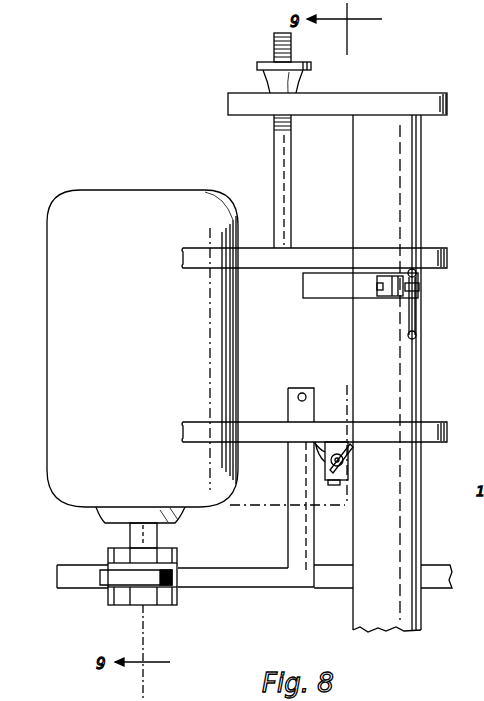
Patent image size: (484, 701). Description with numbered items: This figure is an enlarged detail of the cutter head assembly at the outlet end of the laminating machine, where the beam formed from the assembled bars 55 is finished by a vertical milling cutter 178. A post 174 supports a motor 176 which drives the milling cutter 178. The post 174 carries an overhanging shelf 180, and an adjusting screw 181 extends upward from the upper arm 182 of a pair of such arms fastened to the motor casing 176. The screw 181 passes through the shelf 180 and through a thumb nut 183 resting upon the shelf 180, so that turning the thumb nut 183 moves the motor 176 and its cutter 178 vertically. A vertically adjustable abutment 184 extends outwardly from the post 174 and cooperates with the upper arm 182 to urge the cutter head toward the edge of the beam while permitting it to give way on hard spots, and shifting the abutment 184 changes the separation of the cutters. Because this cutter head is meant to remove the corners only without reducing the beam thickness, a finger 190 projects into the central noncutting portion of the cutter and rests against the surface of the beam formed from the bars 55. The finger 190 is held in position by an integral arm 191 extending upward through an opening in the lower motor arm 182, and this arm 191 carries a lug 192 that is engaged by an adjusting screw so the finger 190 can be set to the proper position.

The bars 55 is at (63, 572).
The post 174 is at (412, 186).
The motor 176 is at (128, 192).
The milling cutter 178 is at (108, 603).
The overhanging shelf 180 is at (334, 97).
The adjusting screw 181 is at (285, 168).
The arm 182 is at (312, 250).
The thumb nut 183 is at (262, 64).
The abutment 184 is at (343, 292).
The finger 190 is at (227, 577).
The arm 191 is at (295, 524).
The lug 192 is at (324, 472).